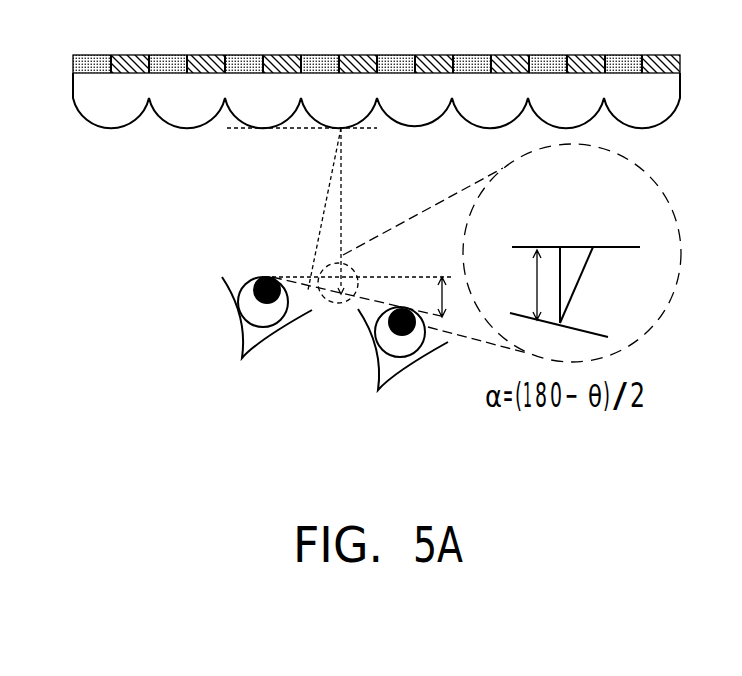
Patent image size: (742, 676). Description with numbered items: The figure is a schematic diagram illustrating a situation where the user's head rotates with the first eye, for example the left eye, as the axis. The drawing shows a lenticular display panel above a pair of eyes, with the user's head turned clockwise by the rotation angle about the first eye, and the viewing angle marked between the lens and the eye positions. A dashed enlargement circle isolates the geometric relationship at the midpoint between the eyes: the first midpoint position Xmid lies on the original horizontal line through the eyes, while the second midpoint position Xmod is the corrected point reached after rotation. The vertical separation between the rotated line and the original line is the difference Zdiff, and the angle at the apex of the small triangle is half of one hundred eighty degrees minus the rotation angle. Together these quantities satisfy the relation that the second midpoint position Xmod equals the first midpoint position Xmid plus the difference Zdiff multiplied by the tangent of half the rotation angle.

The first midpoint position Xmid is at (557, 239).
The second midpoint position Xmod is at (601, 245).
The difference Zdiff is at (514, 285).